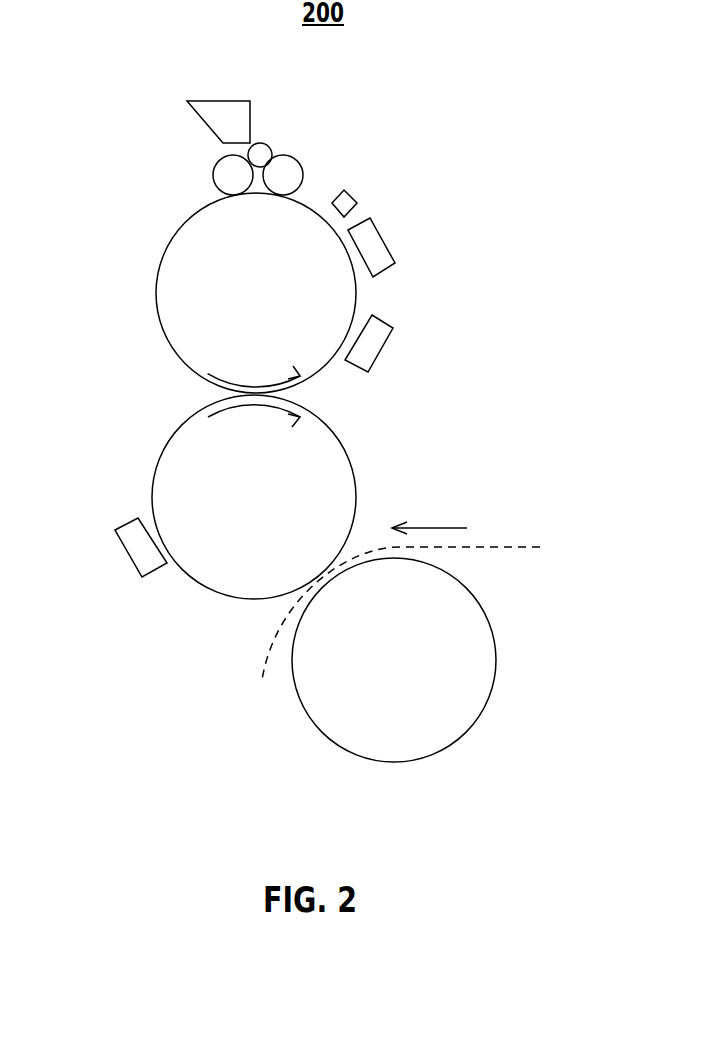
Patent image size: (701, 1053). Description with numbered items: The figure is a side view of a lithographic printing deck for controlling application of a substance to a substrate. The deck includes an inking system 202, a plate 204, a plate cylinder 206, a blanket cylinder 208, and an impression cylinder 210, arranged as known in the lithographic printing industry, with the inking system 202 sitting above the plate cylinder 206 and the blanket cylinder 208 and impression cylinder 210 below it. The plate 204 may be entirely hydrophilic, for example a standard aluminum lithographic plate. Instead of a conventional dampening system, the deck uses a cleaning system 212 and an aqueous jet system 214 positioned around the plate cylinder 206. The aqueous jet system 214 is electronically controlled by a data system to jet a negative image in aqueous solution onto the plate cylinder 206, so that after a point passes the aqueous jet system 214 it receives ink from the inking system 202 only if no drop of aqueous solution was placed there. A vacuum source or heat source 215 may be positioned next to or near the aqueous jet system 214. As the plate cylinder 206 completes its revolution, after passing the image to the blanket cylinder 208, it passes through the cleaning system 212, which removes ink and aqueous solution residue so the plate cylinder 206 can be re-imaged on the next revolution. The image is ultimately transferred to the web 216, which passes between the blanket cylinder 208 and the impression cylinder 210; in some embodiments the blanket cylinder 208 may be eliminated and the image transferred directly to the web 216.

The inking system 202 is at (275, 135).
The plate 204 is at (168, 352).
The plate cylinder 206 is at (195, 292).
The blanket cylinder 208 is at (183, 472).
The impression cylinder 210 is at (425, 715).
The cleaning system 212 is at (392, 350).
The aqueous jet system 214 is at (392, 248).
The vacuum source or heat source 215 is at (353, 195).
The web 216 is at (503, 548).